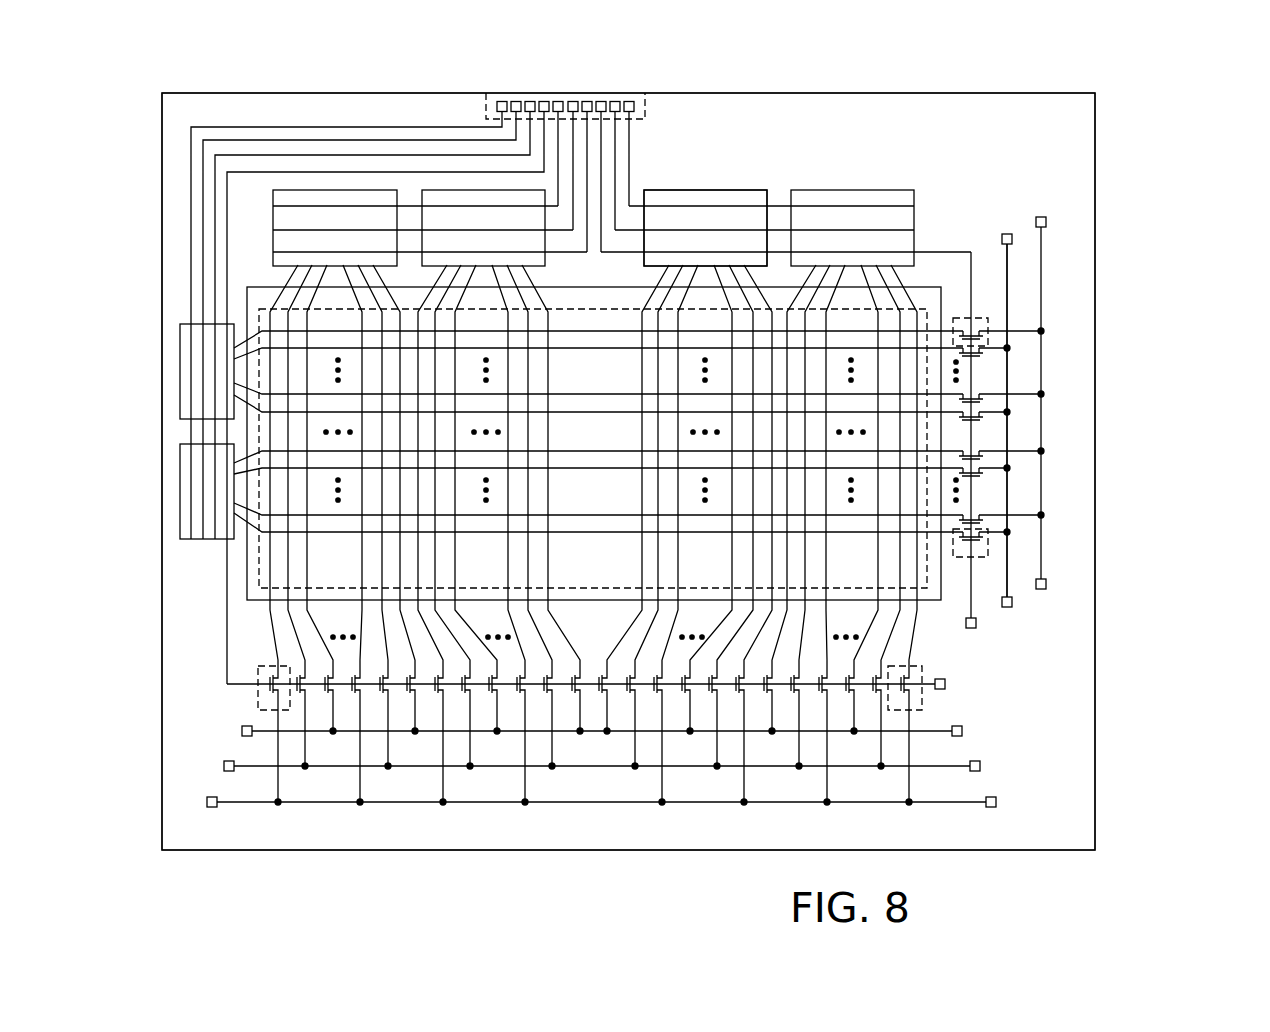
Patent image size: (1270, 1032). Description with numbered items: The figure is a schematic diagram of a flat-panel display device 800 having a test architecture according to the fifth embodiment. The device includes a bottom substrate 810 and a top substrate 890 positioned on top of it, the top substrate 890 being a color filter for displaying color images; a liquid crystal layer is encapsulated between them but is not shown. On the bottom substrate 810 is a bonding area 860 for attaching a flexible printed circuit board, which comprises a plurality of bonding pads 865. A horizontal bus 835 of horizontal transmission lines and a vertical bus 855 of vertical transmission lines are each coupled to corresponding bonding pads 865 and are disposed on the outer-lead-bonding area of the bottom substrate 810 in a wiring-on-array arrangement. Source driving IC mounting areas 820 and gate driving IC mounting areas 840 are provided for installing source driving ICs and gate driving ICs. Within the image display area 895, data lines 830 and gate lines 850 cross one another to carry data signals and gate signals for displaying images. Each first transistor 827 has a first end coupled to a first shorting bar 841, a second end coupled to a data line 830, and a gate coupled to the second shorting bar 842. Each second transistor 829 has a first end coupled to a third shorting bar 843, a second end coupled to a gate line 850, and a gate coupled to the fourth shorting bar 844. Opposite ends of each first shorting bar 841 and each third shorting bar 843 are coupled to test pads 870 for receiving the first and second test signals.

The flat-panel display device 800 is at (1163, 110).
The bottom substrate 810 is at (990, 93).
The source driving IC mounting areas 820 is at (853, 190).
The first transistors 827 is at (258, 697).
The second transistors 829 is at (977, 318).
The data lines 830 is at (548, 475).
The horizontal bus 835 is at (780, 197).
The gate driving IC mounting areas 840 is at (180, 493).
The first shorting bars 841 is at (598, 766).
The second shorting bar 842 is at (641, 700).
The third shorting bars 843 is at (1041, 365).
The fourth shorting bar 844 is at (972, 492).
The gate lines 850 is at (563, 412).
The vertical bus 855 is at (190, 265).
The bonding area 860 is at (648, 100).
The bonding pads 865 is at (505, 100).
The test pads 870 is at (1007, 234).
The top substrate 890 is at (250, 600).
The image display area 895 is at (258, 562).